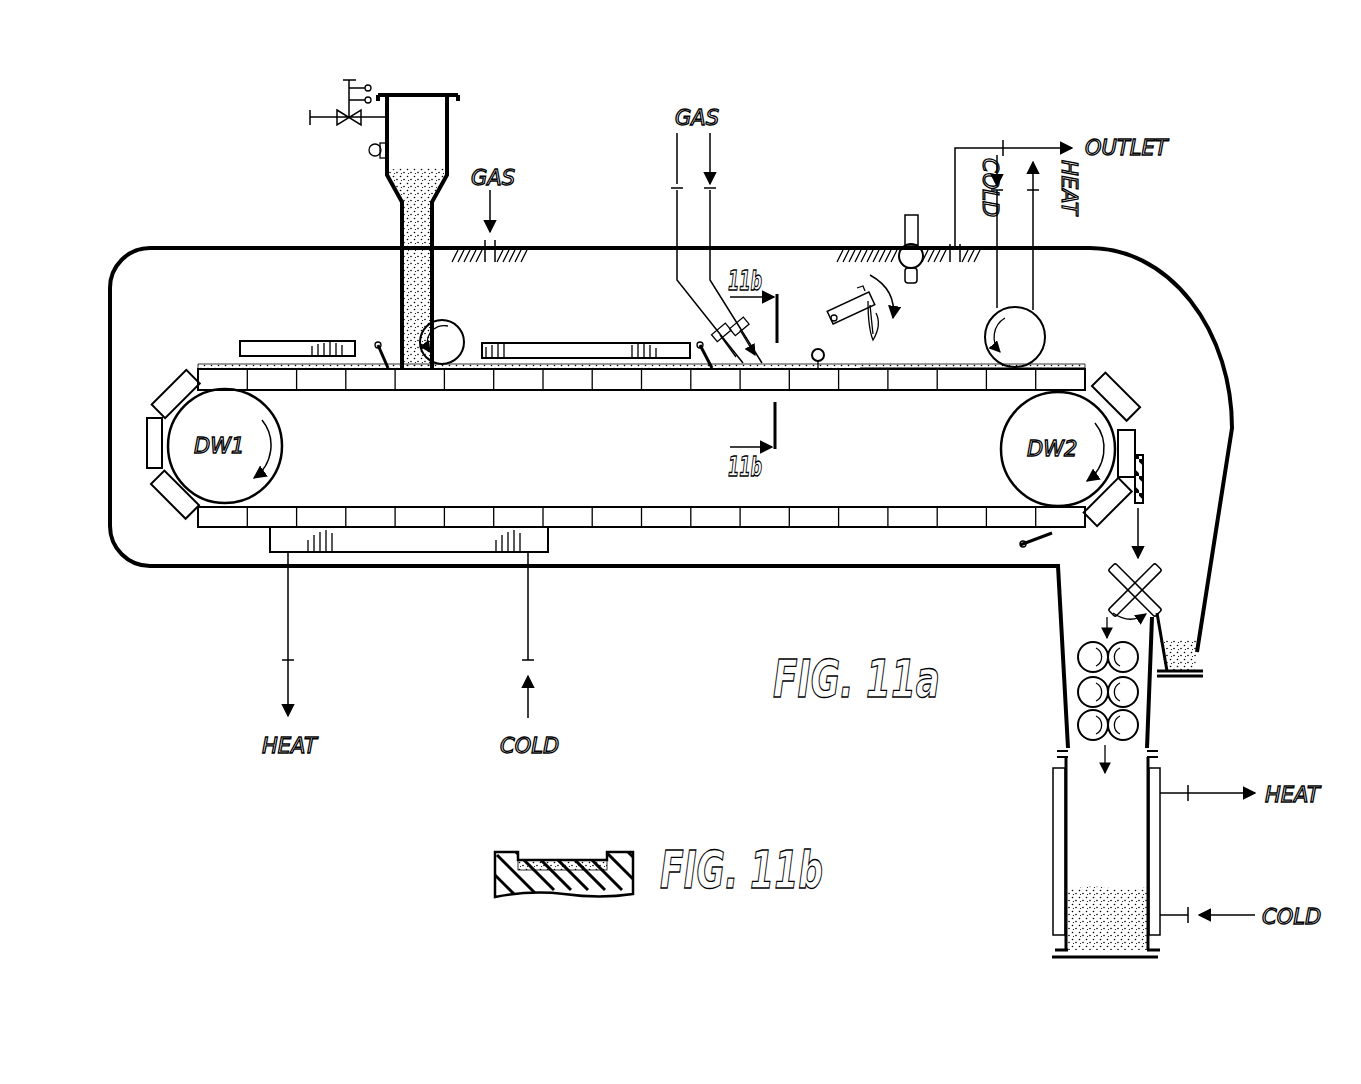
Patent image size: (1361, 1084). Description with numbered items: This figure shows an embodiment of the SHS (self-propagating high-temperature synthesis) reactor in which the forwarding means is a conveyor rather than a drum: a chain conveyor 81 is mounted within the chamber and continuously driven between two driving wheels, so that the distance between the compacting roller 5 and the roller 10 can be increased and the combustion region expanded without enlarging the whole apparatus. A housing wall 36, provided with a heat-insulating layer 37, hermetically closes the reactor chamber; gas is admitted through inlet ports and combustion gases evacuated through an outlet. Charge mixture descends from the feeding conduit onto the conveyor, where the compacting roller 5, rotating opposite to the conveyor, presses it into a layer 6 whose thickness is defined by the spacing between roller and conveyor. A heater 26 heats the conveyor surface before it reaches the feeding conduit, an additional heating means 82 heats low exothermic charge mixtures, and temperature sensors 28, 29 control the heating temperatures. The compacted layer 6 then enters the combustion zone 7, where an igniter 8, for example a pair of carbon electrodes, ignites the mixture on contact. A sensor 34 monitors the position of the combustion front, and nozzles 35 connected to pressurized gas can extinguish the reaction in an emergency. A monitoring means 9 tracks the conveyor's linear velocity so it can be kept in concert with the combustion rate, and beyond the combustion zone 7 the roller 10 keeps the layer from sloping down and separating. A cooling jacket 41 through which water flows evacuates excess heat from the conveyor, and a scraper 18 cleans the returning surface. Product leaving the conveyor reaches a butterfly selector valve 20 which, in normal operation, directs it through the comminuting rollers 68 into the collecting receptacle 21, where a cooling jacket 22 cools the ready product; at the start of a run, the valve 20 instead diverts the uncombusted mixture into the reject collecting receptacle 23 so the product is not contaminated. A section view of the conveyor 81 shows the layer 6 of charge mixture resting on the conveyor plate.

In FIG. 11a, the housing wall 36 is at (208, 246).
In FIG. 11a, the heater 26 is at (284, 340).
In FIG. 11a, the temperature sensor 28 is at (382, 343).
In FIG. 11a, the compacting roller 5 is at (447, 340).
In FIG. 11a, the heating means 82 is at (560, 343).
In FIG. 11a, the temperature sensor 29 is at (699, 340).
In FIG. 11a, the nozzles 35 is at (734, 330).
In FIG. 11a, the sensor 34 is at (816, 348).
In FIG. 11a, the igniter 8 is at (845, 304).
In FIG. 11a, the heat-insulating layer 37 is at (858, 250).
In FIG. 11a, the monitoring means 9 is at (904, 240).
In FIG. 11a, the combustion zone 7 is at (905, 368).
In FIG. 11a, the roller 10 is at (1028, 338).
In FIG. 11a, the layer 6 is at (567, 372).
In FIG. 11b, the layer 6 is at (541, 860).
In FIG. 11a, the chain conveyor 81 is at (718, 528).
In FIG. 11b, the chain conveyor 81 is at (495, 868).
In FIG. 11a, the cooling jacket 41 is at (283, 531).
In FIG. 11a, the scraper 18 is at (1020, 546).
In FIG. 11a, the butterfly selector valve 20 is at (1150, 573).
In FIG. 11a, the reject collecting receptacle 23 is at (1197, 649).
In FIG. 11a, the rollers 68 is at (1078, 723).
In FIG. 11a, the collecting receptacle 21 is at (1160, 848).
In FIG. 11a, the cooling jacket 22 is at (1160, 879).